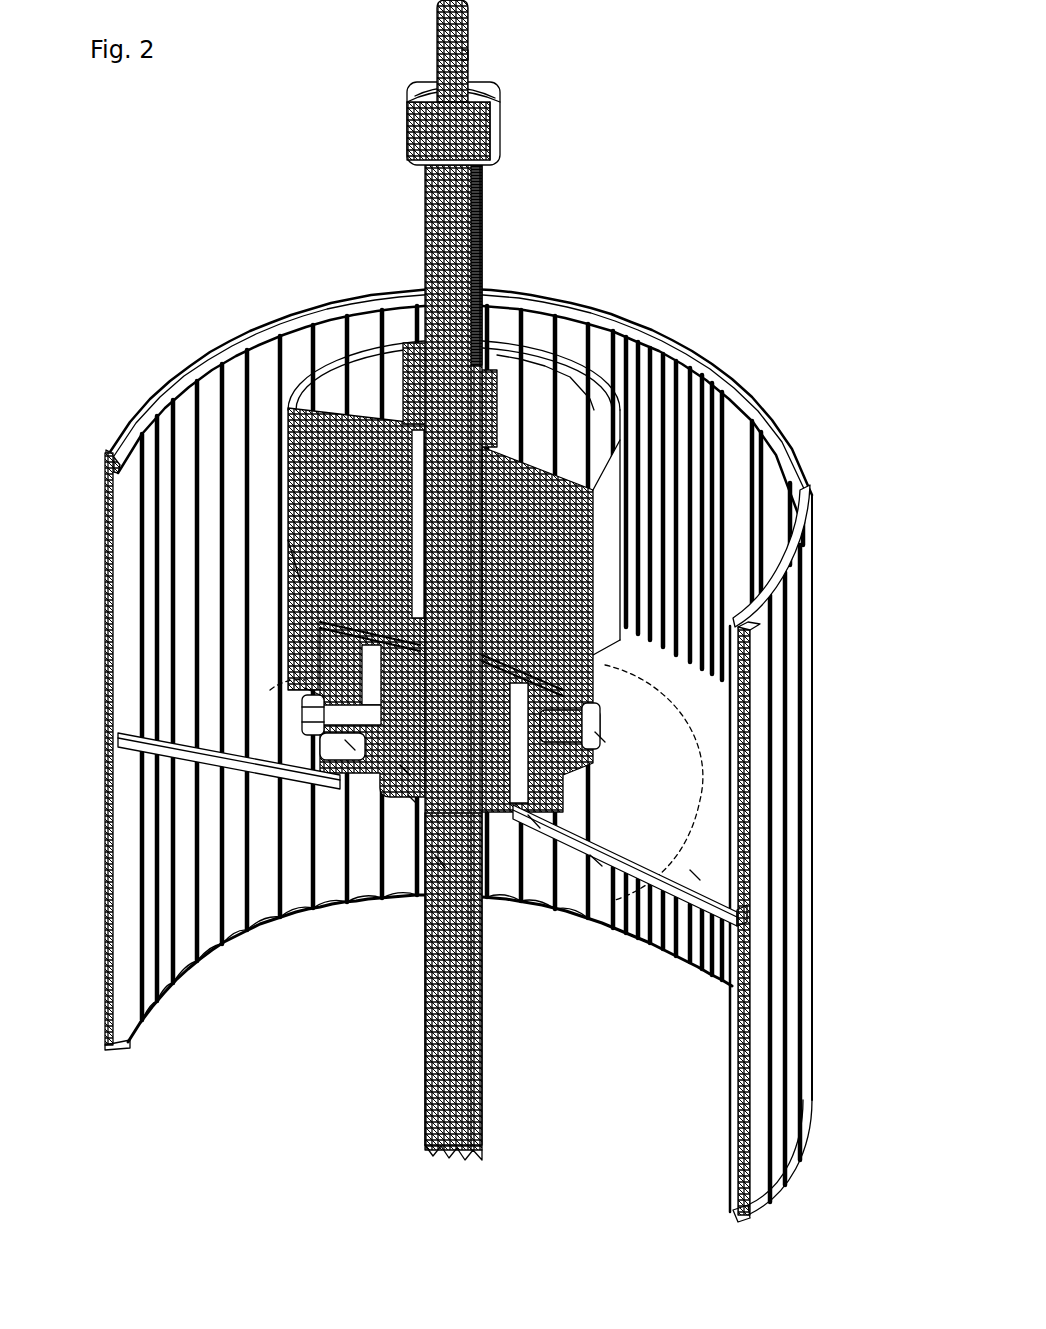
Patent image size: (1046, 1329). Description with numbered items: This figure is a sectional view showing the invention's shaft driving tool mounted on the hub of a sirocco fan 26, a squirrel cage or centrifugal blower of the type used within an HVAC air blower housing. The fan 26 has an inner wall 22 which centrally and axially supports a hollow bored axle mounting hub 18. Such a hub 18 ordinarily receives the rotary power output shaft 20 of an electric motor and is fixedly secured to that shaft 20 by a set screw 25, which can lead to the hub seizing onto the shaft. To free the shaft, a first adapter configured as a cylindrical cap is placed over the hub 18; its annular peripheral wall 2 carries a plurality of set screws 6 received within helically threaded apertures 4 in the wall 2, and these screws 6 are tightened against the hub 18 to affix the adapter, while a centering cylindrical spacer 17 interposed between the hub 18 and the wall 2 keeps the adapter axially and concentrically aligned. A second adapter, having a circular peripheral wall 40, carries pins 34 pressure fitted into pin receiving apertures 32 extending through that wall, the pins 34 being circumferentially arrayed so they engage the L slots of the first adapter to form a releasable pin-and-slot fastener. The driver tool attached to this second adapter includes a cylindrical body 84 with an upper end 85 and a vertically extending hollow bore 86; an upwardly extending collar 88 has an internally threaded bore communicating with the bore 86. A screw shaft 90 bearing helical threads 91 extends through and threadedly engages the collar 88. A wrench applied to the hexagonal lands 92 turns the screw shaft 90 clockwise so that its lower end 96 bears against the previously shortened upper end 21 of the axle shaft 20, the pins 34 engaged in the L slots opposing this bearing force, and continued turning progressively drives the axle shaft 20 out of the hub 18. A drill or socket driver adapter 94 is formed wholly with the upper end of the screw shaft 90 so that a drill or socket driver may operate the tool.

The annular peripheral wall 2 is at (245, 745).
The helically threaded apertures 4 is at (405, 770).
The set screws 6 is at (350, 745).
The centering cylindrical spacer 17 is at (533, 822).
The axle mounting hub 18 is at (412, 800).
The rotary power output shaft 20 is at (447, 1078).
The shortened upper end 21 is at (405, 690).
The inner wall 22 is at (312, 690).
The set screw 25 is at (300, 560).
The sirocco fan 26 is at (120, 440).
The pin receiving apertures 32 is at (600, 737).
The pins 34 is at (596, 860).
The circular peripheral wall 40 is at (335, 667).
The cylindrical body 84 is at (315, 472).
The upper end 85 is at (592, 436).
The hollow bore 86 is at (438, 640).
The collar 88 is at (505, 415).
The screw shaft 90 is at (455, 535).
The helical threads 91 is at (487, 236).
The hexagonal lands 92 is at (500, 133).
The drill or socket driver adapter 94 is at (467, 25).
The lower end 96 is at (440, 862).